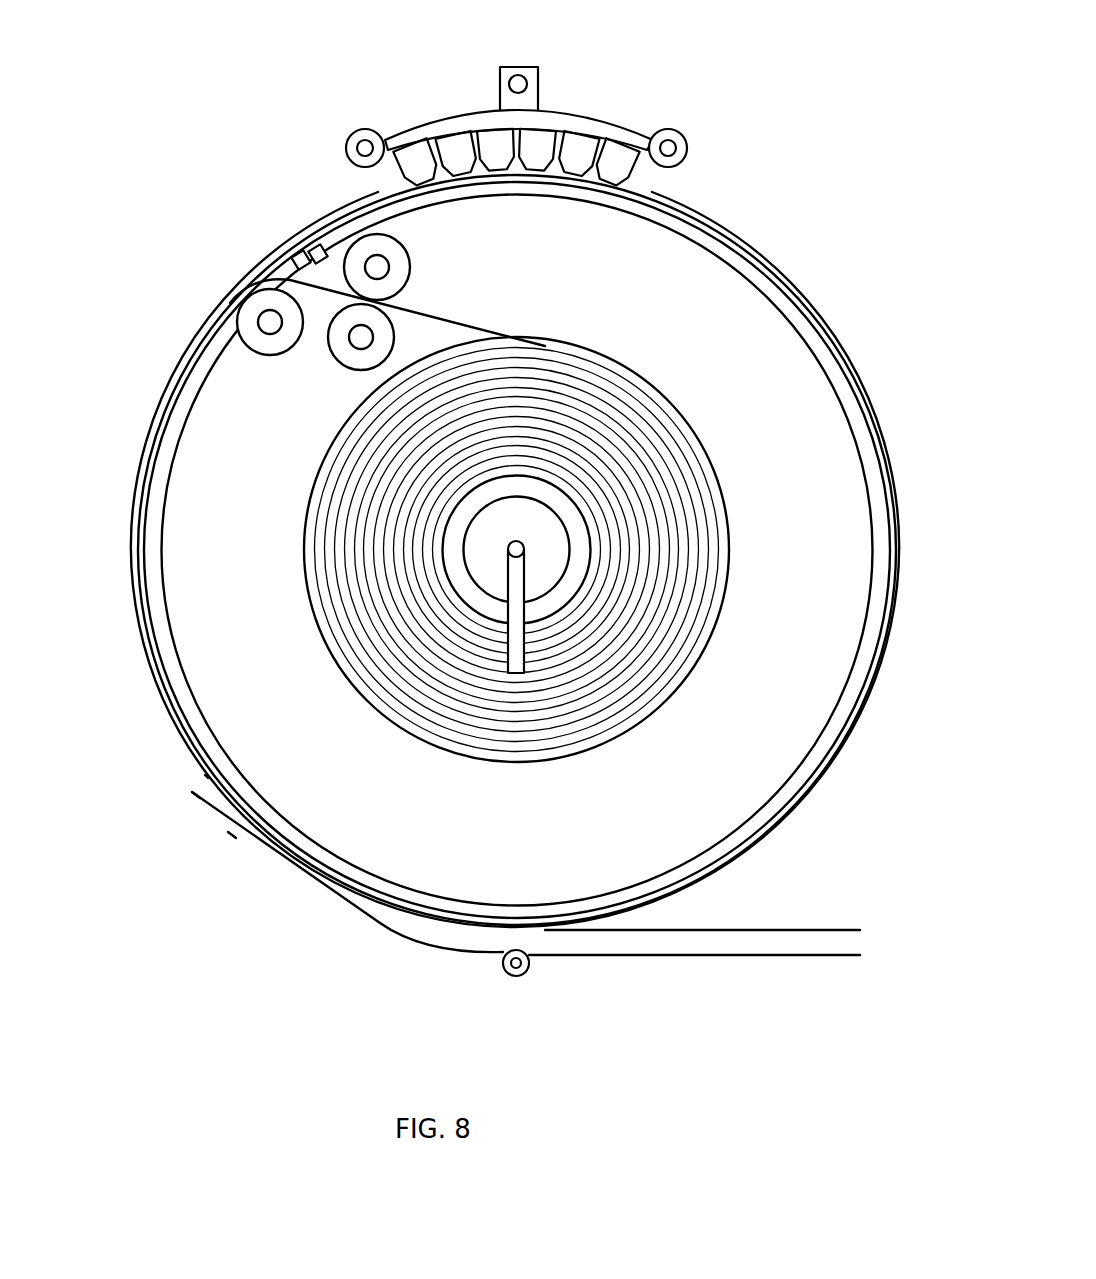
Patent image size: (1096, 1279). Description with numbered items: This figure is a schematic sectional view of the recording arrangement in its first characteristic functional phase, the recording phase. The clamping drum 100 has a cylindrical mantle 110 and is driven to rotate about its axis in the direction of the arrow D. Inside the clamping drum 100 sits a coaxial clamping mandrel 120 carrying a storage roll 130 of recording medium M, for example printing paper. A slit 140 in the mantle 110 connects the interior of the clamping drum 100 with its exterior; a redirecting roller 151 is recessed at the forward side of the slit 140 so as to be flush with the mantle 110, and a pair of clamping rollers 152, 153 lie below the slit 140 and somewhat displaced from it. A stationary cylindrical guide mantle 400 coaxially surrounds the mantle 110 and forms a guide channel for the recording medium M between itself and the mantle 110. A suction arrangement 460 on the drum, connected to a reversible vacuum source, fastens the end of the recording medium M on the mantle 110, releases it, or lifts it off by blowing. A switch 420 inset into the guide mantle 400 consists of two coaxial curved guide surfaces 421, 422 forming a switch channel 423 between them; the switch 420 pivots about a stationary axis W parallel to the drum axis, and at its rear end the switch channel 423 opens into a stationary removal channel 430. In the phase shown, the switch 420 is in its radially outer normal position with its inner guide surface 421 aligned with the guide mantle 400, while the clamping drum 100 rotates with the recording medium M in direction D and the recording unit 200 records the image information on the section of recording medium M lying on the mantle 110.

The clamping drum 100 is at (494, 524).
The mantle 110 is at (160, 494).
The clamping mandrel 120 is at (556, 546).
The storage roll 130 is at (690, 452).
The slit 140 is at (324, 344).
The redirecting roller 151 is at (272, 350).
The clamping roller 152 is at (355, 365).
The clamping roller 153 is at (410, 261).
The recording unit 200 is at (590, 86).
The guide mantle 400 is at (238, 288).
The switch 420 is at (312, 892).
The inner guide surface 421 is at (243, 822).
The outer guide surface 422 is at (207, 813).
The switch channel 423 is at (263, 853).
The removal channel 430 is at (823, 946).
The suction arrangement 460 is at (302, 240).
The recording medium M is at (280, 257).
The direction of rotation D is at (85, 485).
The stationary axis W is at (503, 963).